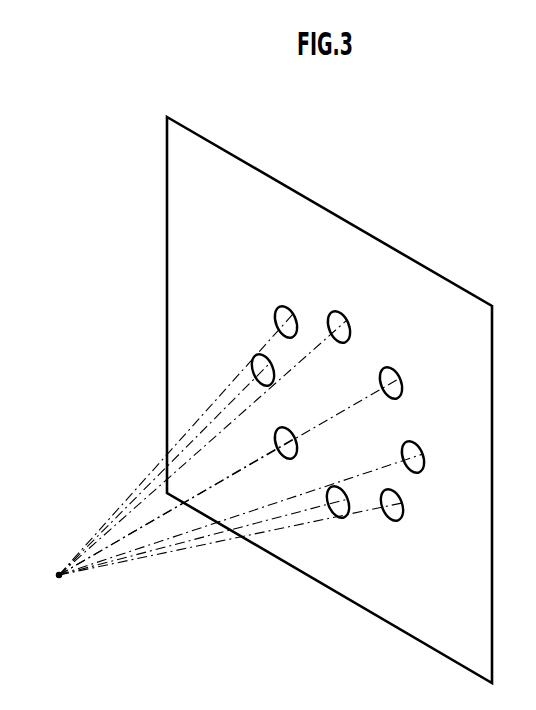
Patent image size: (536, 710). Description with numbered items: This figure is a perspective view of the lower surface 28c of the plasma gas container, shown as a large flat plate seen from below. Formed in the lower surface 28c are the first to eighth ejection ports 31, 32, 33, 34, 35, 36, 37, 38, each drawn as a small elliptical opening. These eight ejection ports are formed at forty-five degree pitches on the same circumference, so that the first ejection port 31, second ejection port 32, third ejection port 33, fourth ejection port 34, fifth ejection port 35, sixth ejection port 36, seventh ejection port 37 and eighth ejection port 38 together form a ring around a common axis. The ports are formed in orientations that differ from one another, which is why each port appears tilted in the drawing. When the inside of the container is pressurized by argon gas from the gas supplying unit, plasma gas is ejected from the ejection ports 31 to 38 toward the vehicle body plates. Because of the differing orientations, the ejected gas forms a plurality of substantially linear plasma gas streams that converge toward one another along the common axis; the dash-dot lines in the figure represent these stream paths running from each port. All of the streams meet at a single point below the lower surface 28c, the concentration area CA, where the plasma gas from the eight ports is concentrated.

The lower surface 28c is at (343, 244).
The concentration area CA is at (59, 575).
The first ejection port 31 is at (263, 370).
The second ejection port 32 is at (286, 322).
The third ejection port 33 is at (339, 327).
The fourth ejection port 34 is at (391, 383).
The fifth ejection port 35 is at (413, 457).
The sixth ejection port 36 is at (392, 505).
The seventh ejection port 37 is at (338, 502).
The eighth ejection port 38 is at (286, 443).